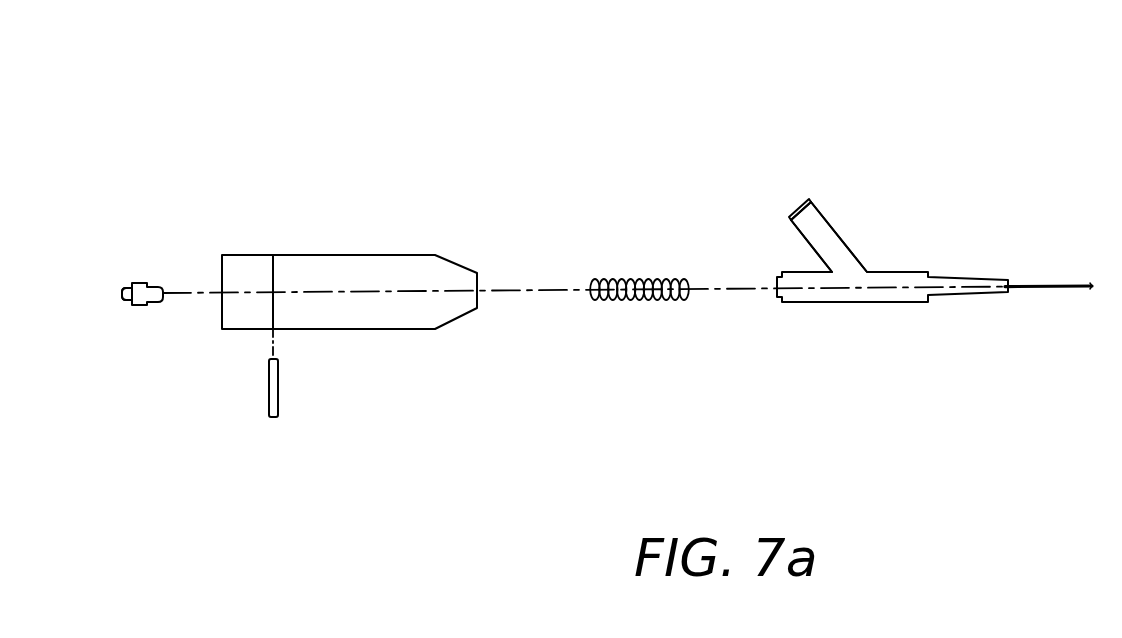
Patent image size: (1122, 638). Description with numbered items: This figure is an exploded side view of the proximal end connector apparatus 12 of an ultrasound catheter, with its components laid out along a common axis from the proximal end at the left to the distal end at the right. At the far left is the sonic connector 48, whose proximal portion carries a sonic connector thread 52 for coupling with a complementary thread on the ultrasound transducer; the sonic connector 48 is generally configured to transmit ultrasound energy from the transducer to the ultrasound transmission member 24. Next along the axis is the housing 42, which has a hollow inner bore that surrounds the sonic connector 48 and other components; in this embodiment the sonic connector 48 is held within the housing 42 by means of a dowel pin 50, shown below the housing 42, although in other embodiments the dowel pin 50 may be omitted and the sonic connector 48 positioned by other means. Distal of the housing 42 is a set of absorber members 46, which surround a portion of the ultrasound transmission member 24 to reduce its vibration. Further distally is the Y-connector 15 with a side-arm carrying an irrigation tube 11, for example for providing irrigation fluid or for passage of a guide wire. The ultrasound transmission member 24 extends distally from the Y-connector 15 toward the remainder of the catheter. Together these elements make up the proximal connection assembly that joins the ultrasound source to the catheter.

The proximal end connector apparatus 12 is at (650, 44).
The sonic connector 48 is at (148, 278).
The sonic connector thread 52 is at (123, 305).
The housing 42 is at (330, 253).
The dowel pin 50 is at (267, 405).
The absorber members 46 is at (630, 300).
The Y-connector 15 is at (888, 272).
The irrigation tube 11 is at (832, 230).
The ultrasound transmission member 24 is at (1032, 282).